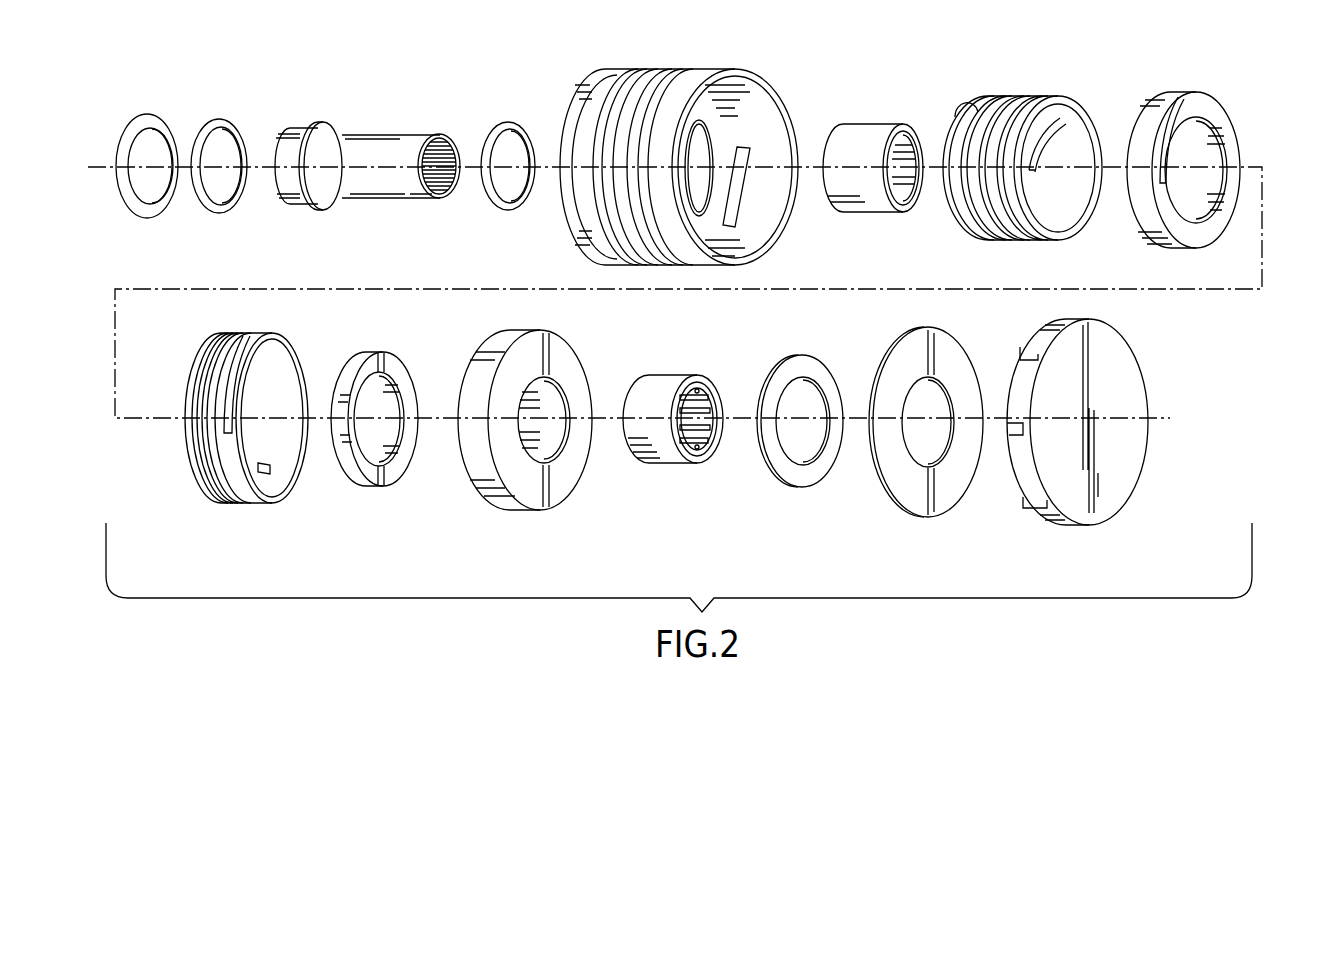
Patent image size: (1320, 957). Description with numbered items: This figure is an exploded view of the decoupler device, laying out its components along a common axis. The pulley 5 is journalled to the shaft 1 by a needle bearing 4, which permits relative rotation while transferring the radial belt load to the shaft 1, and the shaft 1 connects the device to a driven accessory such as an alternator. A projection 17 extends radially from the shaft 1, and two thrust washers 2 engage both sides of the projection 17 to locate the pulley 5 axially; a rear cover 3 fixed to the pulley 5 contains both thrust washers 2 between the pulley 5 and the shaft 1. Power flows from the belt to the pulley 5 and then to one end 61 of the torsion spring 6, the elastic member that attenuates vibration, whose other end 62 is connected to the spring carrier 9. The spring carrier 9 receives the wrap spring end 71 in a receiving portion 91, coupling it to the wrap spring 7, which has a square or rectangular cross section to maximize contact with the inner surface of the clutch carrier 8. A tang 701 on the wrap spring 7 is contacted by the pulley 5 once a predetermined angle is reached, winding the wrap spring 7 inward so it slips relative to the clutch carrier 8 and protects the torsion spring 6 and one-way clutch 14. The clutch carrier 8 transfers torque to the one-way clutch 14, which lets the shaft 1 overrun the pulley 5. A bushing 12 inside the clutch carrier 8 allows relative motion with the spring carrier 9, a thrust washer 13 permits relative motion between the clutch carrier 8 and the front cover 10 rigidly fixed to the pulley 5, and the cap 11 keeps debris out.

The shaft 1 is at (396, 134).
The projection 17 is at (330, 118).
The thrust washers 2 is at (215, 120).
The rear cover 3 is at (147, 115).
The needle bearing 4 is at (866, 124).
The pulley 5 is at (660, 75).
The torsion spring 6 is at (1009, 146).
The end 61 is at (958, 112).
The other end 62 is at (1032, 168).
The wrap spring 7 is at (229, 428).
The wrap spring end 71 is at (228, 400).
The tang 701 is at (258, 467).
The clutch carrier 8 is at (480, 355).
The spring carrier 9 is at (1210, 150).
The receiving portion 91 is at (1165, 135).
The front cover 10 is at (902, 357).
The cap 11 is at (1043, 340).
The bushing 12 is at (370, 357).
The thrust washer 13 is at (792, 365).
The one-way clutch 14 is at (665, 383).